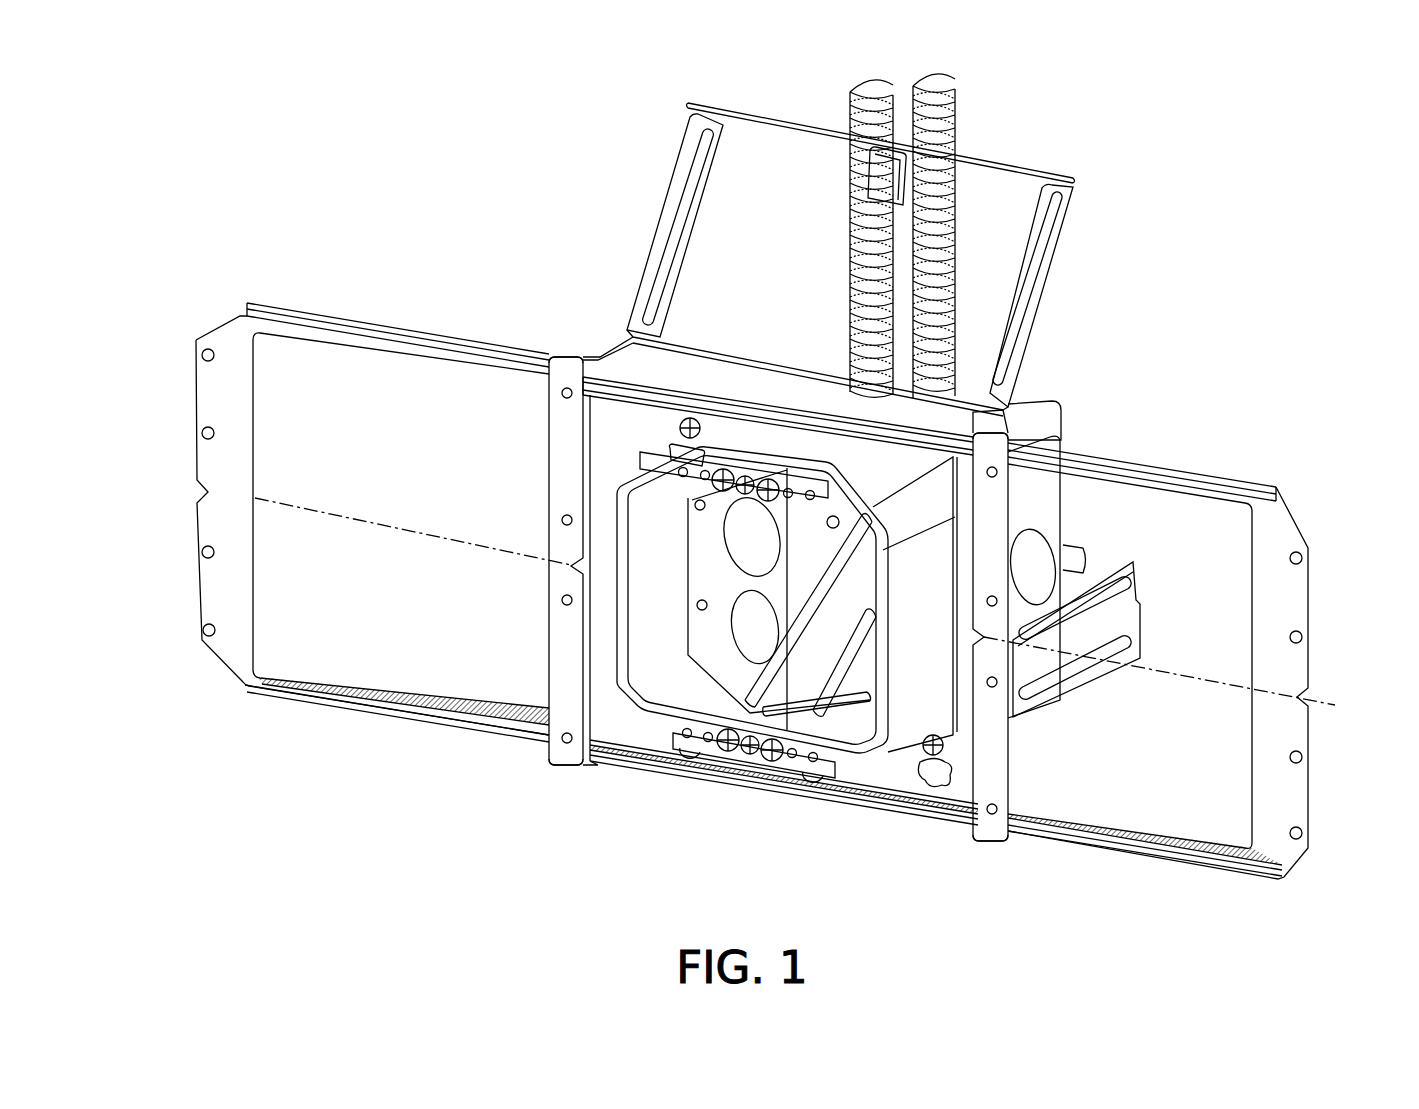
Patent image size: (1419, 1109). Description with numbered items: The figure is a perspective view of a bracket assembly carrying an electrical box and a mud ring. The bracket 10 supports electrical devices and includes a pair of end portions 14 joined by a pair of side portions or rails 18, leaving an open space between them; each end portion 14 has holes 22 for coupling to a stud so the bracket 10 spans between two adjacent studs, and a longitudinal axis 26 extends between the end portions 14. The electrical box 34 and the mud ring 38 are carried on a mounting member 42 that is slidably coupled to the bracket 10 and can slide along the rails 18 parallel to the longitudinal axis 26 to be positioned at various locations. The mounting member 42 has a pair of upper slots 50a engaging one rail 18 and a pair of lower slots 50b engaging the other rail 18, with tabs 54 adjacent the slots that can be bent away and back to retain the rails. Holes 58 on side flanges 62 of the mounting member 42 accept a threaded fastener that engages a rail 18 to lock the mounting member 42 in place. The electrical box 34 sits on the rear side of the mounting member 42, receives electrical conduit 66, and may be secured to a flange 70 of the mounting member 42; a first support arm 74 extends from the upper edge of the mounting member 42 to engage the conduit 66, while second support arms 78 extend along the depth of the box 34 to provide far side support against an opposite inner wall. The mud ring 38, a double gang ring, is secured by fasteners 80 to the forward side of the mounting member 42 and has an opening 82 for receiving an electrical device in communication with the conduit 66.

The bracket 10 is at (388, 258).
The end portions 14 is at (182, 387).
The rails 18 is at (503, 338).
The holes 22 is at (206, 548).
The longitudinal axis 26 is at (440, 528).
The electrical box 34 is at (1043, 424).
The mud ring 38 is at (892, 768).
The mounting member 42 is at (565, 653).
The upper slots 50a is at (571, 392).
The lower slots 50b is at (598, 782).
The tabs 54 is at (603, 357).
The holes 58 is at (562, 393).
The side flanges 62 is at (567, 496).
The electrical conduit 66 is at (925, 272).
The flange 70 is at (702, 375).
The first support arm 74 is at (1075, 185).
The second support arms 78 is at (1090, 678).
The fasteners 80 is at (680, 409).
The opening 82 is at (713, 750).